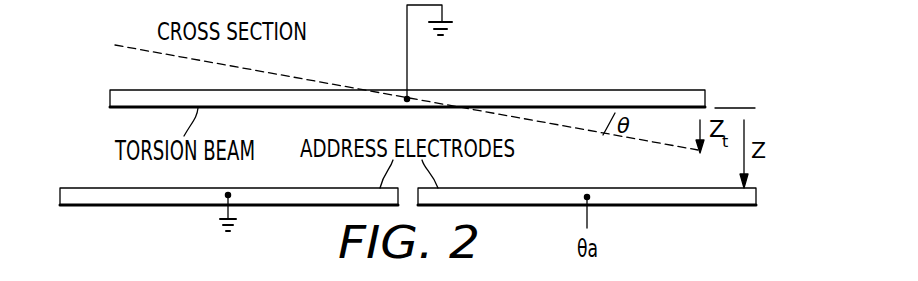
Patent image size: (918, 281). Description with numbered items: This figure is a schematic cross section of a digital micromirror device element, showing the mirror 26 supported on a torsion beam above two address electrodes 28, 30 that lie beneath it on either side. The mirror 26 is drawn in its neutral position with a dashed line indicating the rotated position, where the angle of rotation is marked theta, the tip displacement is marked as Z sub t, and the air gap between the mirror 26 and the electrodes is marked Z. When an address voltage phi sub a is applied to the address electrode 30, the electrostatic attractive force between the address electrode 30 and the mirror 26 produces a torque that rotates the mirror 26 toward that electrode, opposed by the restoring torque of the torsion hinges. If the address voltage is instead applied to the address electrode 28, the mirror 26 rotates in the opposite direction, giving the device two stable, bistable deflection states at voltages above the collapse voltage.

The mirror 26 is at (110, 97).
The address electrode 28 is at (60, 196).
The address electrode 30 is at (757, 195).